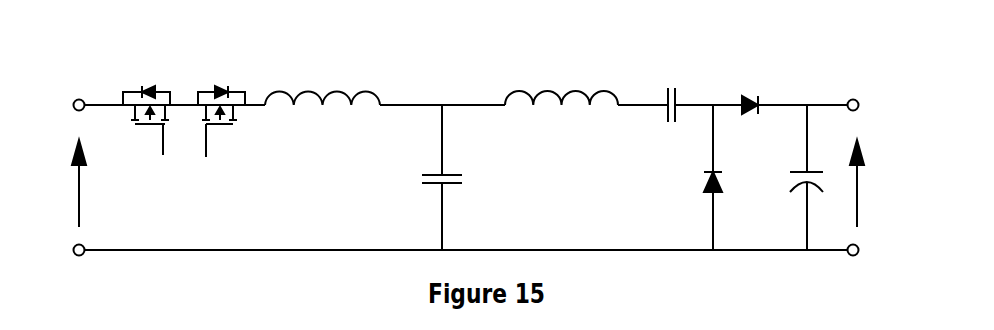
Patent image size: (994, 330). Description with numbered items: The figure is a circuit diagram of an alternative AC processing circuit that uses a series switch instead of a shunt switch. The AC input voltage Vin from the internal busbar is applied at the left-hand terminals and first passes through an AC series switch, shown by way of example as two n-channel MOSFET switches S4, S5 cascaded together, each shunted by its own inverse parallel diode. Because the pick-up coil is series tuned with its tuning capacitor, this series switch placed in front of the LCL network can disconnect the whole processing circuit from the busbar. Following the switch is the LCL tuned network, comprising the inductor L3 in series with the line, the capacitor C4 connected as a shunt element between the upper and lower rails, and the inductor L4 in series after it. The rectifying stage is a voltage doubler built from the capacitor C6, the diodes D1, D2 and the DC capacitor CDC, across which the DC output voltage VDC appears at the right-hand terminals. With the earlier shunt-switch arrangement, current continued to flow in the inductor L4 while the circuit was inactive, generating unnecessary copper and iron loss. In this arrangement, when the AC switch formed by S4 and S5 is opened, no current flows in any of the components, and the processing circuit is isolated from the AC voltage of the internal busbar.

The n-channel MOSFET switch S4 is at (146, 123).
The n-channel MOSFET switch S5 is at (221, 124).
The inductor L3 is at (322, 80).
The inductor L4 is at (561, 80).
The capacitor C4 is at (459, 177).
The capacitor C6 is at (676, 91).
The diode D1 is at (692, 177).
The diode D2 is at (755, 86).
The capacitor CDC is at (790, 177).
The DC output voltage VDC is at (875, 183).
The input voltage Vin is at (64, 183).